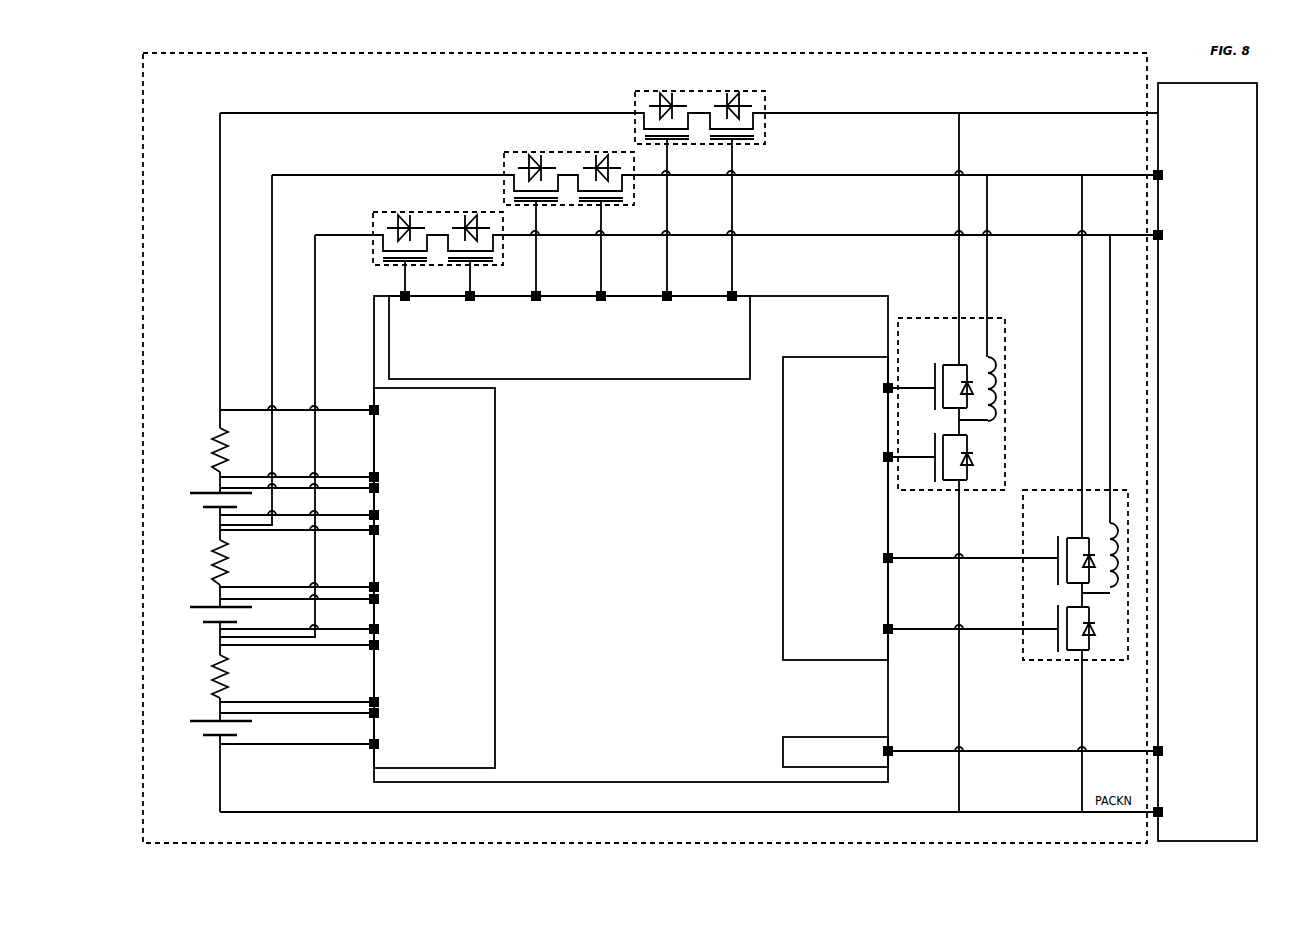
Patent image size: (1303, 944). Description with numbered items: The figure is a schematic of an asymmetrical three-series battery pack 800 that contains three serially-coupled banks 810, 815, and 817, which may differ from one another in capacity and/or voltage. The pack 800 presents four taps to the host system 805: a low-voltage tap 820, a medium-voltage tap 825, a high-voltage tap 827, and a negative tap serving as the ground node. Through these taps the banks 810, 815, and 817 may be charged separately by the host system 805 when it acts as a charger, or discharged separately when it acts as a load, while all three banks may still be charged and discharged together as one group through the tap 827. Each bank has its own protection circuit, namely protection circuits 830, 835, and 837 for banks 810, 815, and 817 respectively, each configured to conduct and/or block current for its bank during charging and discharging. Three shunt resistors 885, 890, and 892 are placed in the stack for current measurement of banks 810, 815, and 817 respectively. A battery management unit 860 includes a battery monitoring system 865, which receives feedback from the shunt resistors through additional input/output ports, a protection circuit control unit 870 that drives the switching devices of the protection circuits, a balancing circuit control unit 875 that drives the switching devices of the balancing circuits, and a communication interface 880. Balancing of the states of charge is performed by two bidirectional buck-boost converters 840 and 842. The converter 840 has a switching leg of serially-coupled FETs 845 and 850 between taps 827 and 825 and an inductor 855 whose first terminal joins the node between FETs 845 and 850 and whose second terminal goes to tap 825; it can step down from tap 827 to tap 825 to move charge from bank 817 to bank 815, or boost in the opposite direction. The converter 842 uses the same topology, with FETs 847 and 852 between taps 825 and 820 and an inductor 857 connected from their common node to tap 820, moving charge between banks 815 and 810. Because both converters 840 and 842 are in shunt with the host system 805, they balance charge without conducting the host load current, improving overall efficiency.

The battery pack 800 is at (206, 52).
The host system 805 is at (1207, 462).
The bank 810 is at (211, 718).
The bank 815 is at (211, 603).
The bank 817 is at (211, 489).
The low-voltage tap 820 is at (849, 232).
The medium-voltage tap 825 is at (849, 172).
The high-voltage tap 827 is at (849, 112).
The protection circuit 830 is at (383, 211).
The protection circuit 835 is at (510, 151).
The protection circuit 837 is at (639, 90).
The bidirectional converter 840 is at (951, 317).
The bidirectional converter 842 is at (1073, 489).
The FET 845 is at (933, 370).
The FET 847 is at (1056, 542).
The FET 850 is at (933, 442).
The FET 852 is at (1056, 615).
The inductor 855 is at (986, 369).
The inductor 857 is at (1108, 541).
The battery management unit 860 is at (631, 539).
The battery monitoring system 865 is at (357, 578).
The protection circuit control unit 870 is at (569, 335).
The balancing circuit control unit 875 is at (920, 508).
The communication interface 880 is at (792, 734).
The shunt resistor 885 is at (212, 666).
The shunt resistor 890 is at (212, 551).
The shunt resistor 892 is at (212, 439).